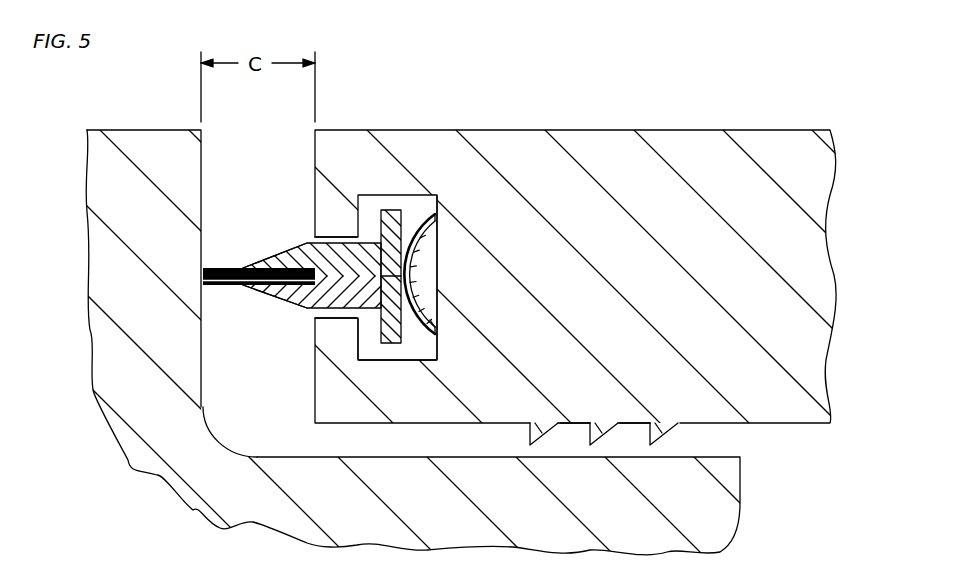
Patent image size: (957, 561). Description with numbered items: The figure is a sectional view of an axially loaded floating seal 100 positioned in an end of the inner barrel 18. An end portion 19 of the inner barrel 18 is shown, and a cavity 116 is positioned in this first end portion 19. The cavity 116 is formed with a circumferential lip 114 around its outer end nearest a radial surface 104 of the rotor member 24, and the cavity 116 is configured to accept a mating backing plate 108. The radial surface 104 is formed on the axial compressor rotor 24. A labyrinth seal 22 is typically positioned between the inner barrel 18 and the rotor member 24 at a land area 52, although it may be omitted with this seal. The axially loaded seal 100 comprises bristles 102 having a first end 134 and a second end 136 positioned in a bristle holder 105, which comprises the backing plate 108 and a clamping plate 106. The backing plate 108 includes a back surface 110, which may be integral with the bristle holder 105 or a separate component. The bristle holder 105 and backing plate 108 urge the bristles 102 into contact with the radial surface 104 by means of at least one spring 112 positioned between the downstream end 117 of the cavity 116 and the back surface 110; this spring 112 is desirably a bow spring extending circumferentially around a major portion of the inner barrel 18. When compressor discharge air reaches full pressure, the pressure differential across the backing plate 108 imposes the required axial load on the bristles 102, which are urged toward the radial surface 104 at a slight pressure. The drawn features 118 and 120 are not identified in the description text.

The inner barrel 18 is at (747, 130).
The end portion 19 is at (315, 150).
The labyrinth seal 22 is at (542, 435).
The rotor member 24 is at (740, 475).
The land area 52 is at (545, 465).
The axially loaded seal 100 is at (283, 228).
The bristles 102 is at (222, 267).
The radial surface 104 is at (203, 347).
The bristle holder 105 is at (273, 247).
The clamping plate 106 is at (363, 240).
The backing plate 108 is at (358, 322).
The back surface 110 is at (403, 230).
The spring 112 is at (405, 315).
The circumferential lip 114 is at (317, 325).
The cavity 116 is at (398, 364).
The downstream end 117 is at (438, 257).
The tapered lower surface 118 is at (312, 313).
The upper shelf 120 is at (322, 240).
The first end 134 is at (202, 281).
The second end 136 is at (405, 282).